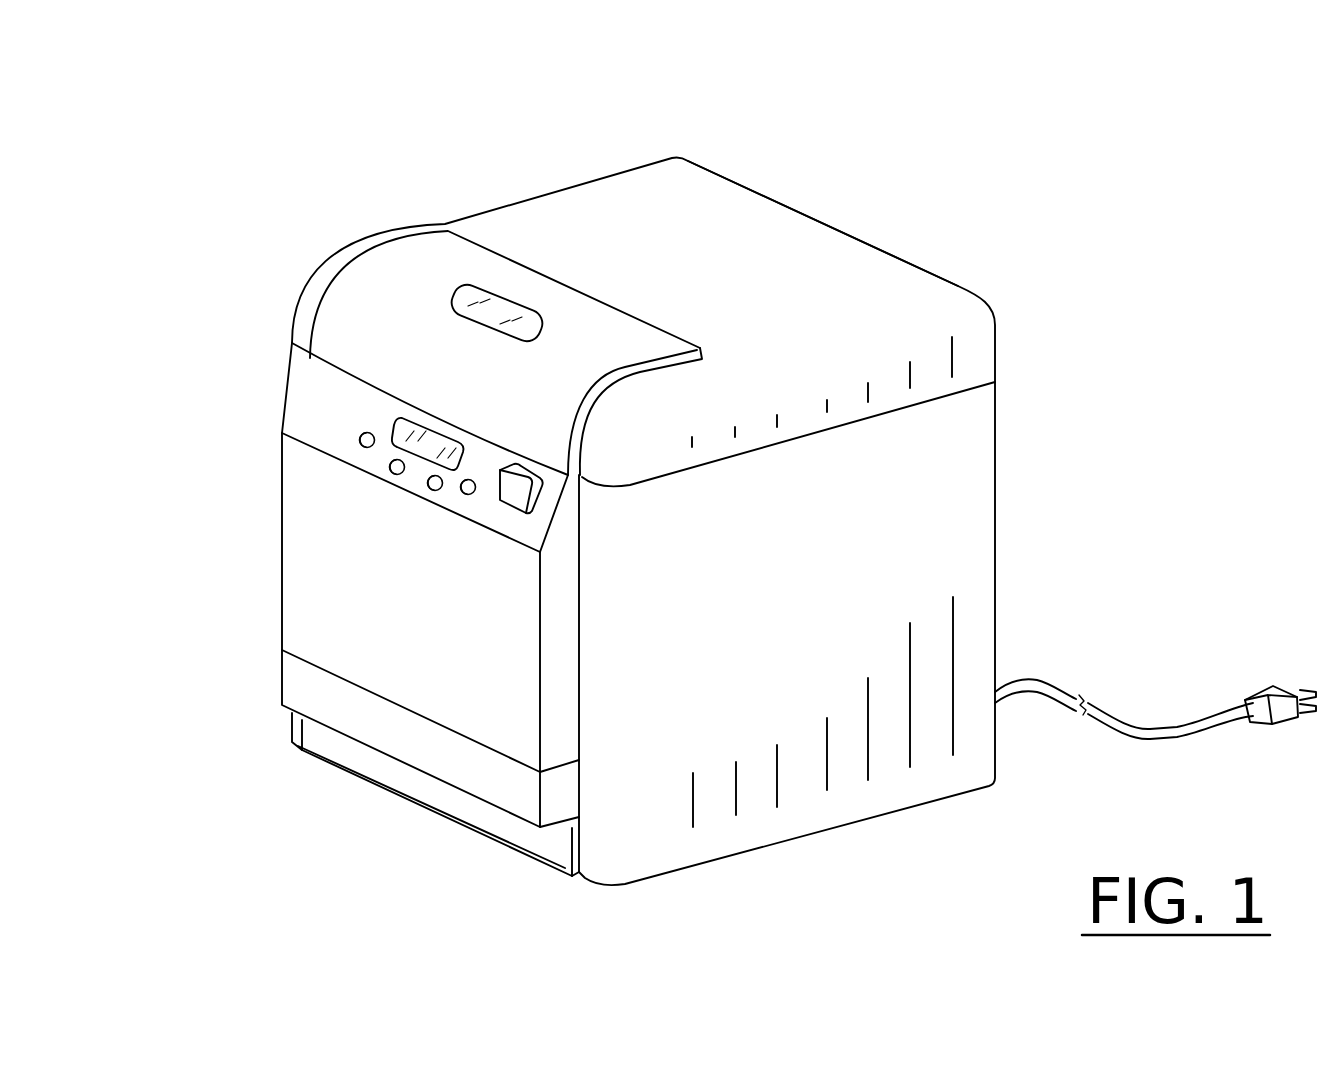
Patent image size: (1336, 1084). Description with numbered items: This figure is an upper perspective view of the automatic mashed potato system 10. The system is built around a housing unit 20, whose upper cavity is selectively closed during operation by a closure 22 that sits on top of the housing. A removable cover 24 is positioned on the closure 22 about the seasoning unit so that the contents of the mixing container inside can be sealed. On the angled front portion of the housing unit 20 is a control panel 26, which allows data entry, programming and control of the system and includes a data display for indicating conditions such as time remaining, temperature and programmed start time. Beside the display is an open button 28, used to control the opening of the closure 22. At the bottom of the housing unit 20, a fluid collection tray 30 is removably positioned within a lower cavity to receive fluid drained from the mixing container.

The automatic mashed potato system 10 is at (1118, 191).
The housing unit 20 is at (995, 481).
The closure 22 is at (767, 240).
The removable cover 24 is at (417, 267).
The control panel 26 is at (375, 455).
The open button 28 is at (511, 494).
The fluid collection tray 30 is at (422, 771).